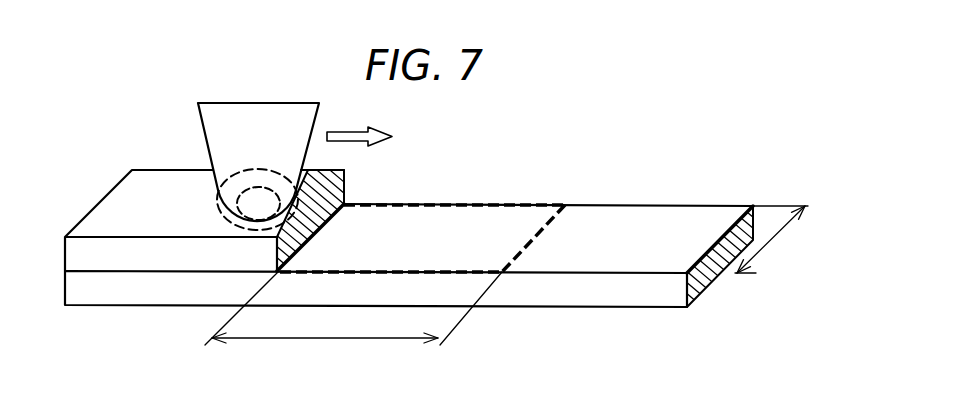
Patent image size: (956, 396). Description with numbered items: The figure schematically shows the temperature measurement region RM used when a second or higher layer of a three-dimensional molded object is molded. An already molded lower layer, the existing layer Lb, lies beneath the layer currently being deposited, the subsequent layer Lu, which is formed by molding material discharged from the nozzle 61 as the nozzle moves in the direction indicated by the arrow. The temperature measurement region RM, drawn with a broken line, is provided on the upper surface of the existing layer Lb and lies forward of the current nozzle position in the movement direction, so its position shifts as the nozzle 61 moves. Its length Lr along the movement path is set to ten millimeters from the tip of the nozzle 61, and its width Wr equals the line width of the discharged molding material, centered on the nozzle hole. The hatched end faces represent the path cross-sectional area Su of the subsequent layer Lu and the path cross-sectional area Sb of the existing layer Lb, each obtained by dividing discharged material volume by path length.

The nozzle 61 is at (208, 140).
The subsequent layer Lu is at (104, 197).
The existing layer Lb is at (100, 305).
The path cross-sectional area of the subsequent layer Su is at (332, 197).
The path cross-sectional area of the existing layer Sb is at (695, 288).
The temperature measurement region RM is at (487, 203).
The length of the temperature measurement region Lr is at (353, 308).
The width of the temperature measurement region Wr is at (771, 239).